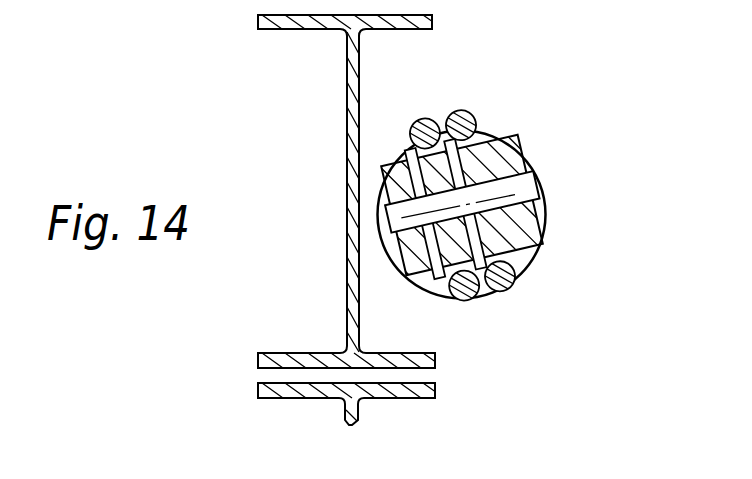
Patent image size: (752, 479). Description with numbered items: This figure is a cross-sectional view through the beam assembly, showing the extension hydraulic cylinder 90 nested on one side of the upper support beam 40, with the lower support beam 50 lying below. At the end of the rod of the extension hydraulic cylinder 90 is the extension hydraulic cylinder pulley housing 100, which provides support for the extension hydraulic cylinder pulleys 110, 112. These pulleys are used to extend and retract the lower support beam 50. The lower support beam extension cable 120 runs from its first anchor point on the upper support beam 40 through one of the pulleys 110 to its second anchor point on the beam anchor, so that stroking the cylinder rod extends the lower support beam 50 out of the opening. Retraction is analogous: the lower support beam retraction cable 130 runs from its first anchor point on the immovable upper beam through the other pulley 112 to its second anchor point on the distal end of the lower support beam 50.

The upper support beam 40 is at (347, 75).
The lower support beam 50 is at (436, 395).
The extension hydraulic cylinder 90 is at (547, 207).
The extension hydraulic cylinder pulley housing 100 is at (520, 143).
The extension hydraulic cylinder pulley 110 is at (438, 285).
The extension hydraulic cylinder pulley 112 is at (523, 270).
The lower support beam extension cable 120 is at (426, 115).
The lower support beam retraction cable 130 is at (468, 112).